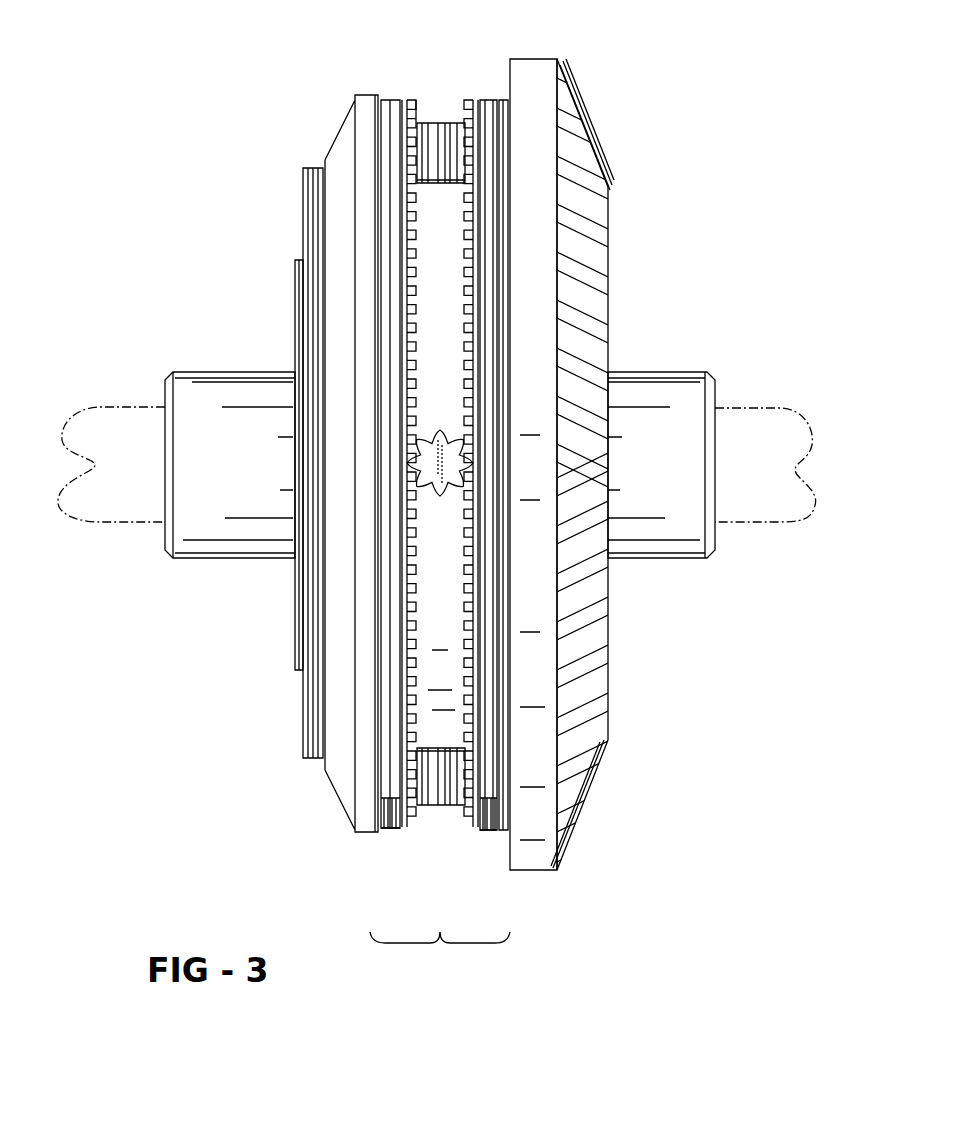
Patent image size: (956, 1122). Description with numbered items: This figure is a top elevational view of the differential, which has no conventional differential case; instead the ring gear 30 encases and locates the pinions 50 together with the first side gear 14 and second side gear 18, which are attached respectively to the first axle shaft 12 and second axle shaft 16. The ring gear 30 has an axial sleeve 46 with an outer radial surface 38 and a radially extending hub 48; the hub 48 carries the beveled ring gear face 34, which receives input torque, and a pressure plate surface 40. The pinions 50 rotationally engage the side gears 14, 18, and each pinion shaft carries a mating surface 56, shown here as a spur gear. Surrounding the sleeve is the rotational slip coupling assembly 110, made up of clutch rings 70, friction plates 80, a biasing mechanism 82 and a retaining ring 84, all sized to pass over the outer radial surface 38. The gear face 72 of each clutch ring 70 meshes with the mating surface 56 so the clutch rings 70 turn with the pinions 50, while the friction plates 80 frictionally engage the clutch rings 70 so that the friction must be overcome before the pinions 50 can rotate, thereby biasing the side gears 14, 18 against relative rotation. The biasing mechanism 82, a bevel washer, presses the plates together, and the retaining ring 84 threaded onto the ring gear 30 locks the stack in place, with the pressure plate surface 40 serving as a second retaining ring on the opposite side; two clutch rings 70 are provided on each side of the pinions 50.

The first axle shaft 12 is at (761, 415).
The first side gear 14 is at (666, 385).
The second axle shaft 16 is at (121, 405).
The second side gear 18 is at (225, 368).
The ring gear 30 is at (538, 56).
The ring gear face 34 is at (600, 250).
The outer radial surface 38 is at (300, 228).
The pressure plate surface 40 is at (506, 98).
The axial sleeve 46 is at (305, 167).
The radially extending hub 48 is at (597, 158).
The pinion 50 is at (442, 130).
The mating surface 56 is at (440, 806).
The clutch ring 70 is at (399, 104).
The gear face 72 is at (418, 100).
The friction plate 80 is at (392, 100).
The biasing mechanism 82 is at (383, 832).
The retaining ring 84 is at (350, 112).
The rotational slip coupling assembly 110 is at (440, 948).